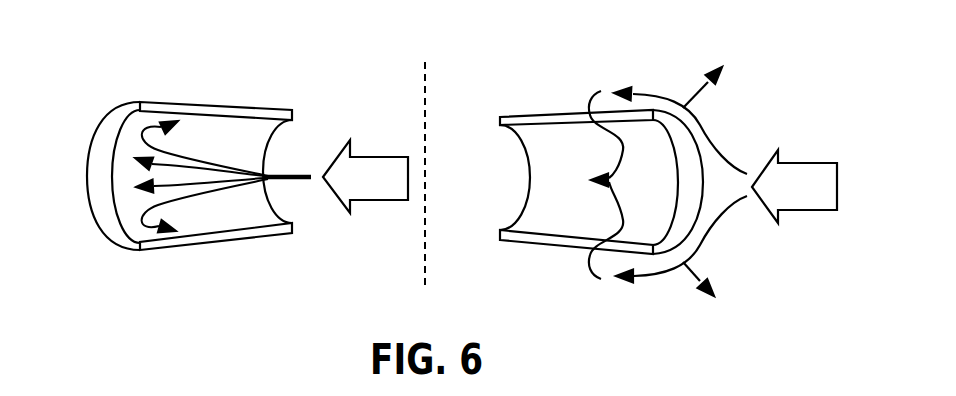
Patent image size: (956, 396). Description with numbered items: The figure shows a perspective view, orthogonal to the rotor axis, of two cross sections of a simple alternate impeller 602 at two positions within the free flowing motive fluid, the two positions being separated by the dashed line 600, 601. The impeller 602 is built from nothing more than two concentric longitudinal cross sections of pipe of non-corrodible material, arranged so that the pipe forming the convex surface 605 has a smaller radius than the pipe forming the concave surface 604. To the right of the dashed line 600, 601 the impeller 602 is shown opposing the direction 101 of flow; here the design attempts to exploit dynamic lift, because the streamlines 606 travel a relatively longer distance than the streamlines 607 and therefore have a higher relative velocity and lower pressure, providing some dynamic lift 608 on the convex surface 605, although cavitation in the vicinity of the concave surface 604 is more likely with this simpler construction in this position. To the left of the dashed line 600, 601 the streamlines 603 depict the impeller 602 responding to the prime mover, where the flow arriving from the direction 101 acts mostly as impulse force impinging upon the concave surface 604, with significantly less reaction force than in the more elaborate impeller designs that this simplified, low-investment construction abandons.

The direction of flow 101 is at (393, 188).
The dashed line 600 is at (444, 242).
The dashed line 601 is at (406, 113).
The impeller 602 is at (258, 220).
The streamlines 603 is at (296, 174).
The concave surface 604 is at (276, 199).
The convex surface 605 is at (107, 118).
The streamlines 606 is at (698, 121).
The streamlines 607 is at (588, 103).
The dynamic lift 608 is at (686, 181).